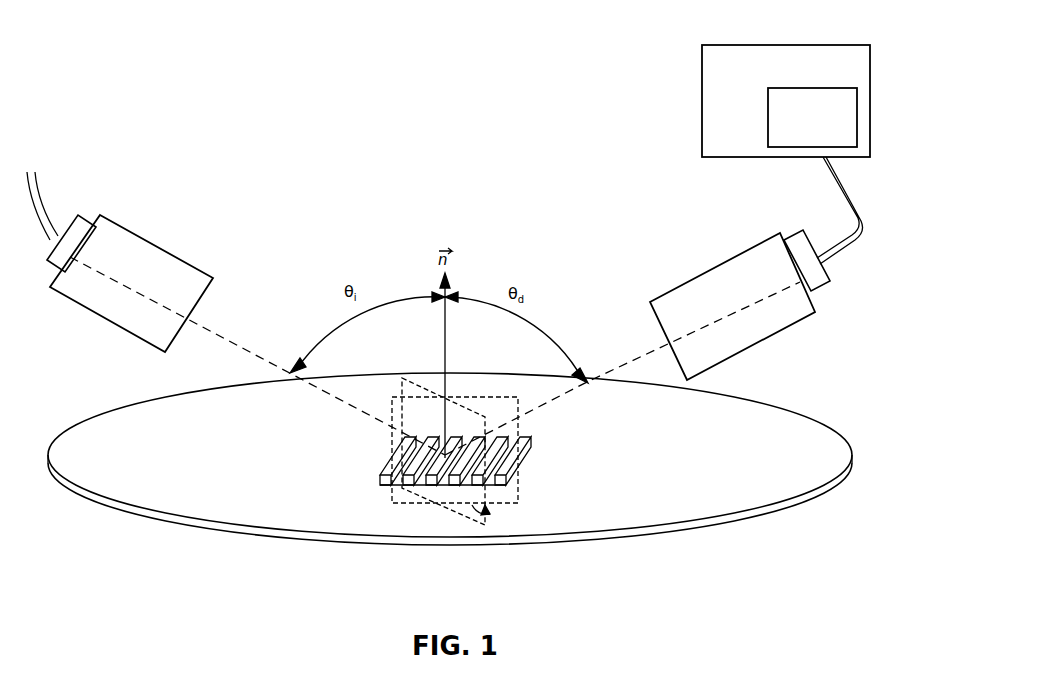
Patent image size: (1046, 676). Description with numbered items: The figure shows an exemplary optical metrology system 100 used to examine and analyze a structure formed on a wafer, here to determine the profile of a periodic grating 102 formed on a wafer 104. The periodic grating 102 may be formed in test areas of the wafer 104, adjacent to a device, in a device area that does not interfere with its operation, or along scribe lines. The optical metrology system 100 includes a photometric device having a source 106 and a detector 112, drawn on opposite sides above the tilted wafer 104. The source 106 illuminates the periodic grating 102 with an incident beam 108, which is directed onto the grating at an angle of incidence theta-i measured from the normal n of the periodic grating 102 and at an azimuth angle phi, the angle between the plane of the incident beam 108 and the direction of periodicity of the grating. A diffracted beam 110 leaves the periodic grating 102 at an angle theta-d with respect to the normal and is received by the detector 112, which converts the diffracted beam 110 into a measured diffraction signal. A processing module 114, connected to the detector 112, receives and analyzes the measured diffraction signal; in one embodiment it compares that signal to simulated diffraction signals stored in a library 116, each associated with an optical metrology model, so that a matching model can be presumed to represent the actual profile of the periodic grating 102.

The optical metrology system 100 is at (340, 118).
The periodic grating 102 is at (379, 492).
The wafer 104 is at (115, 405).
The source 106 is at (137, 235).
The incident beam 108 is at (222, 340).
The diffracted beam 110 is at (650, 355).
The detector 112 is at (700, 268).
The processing module 114 is at (786, 101).
The library 116 is at (812, 117).